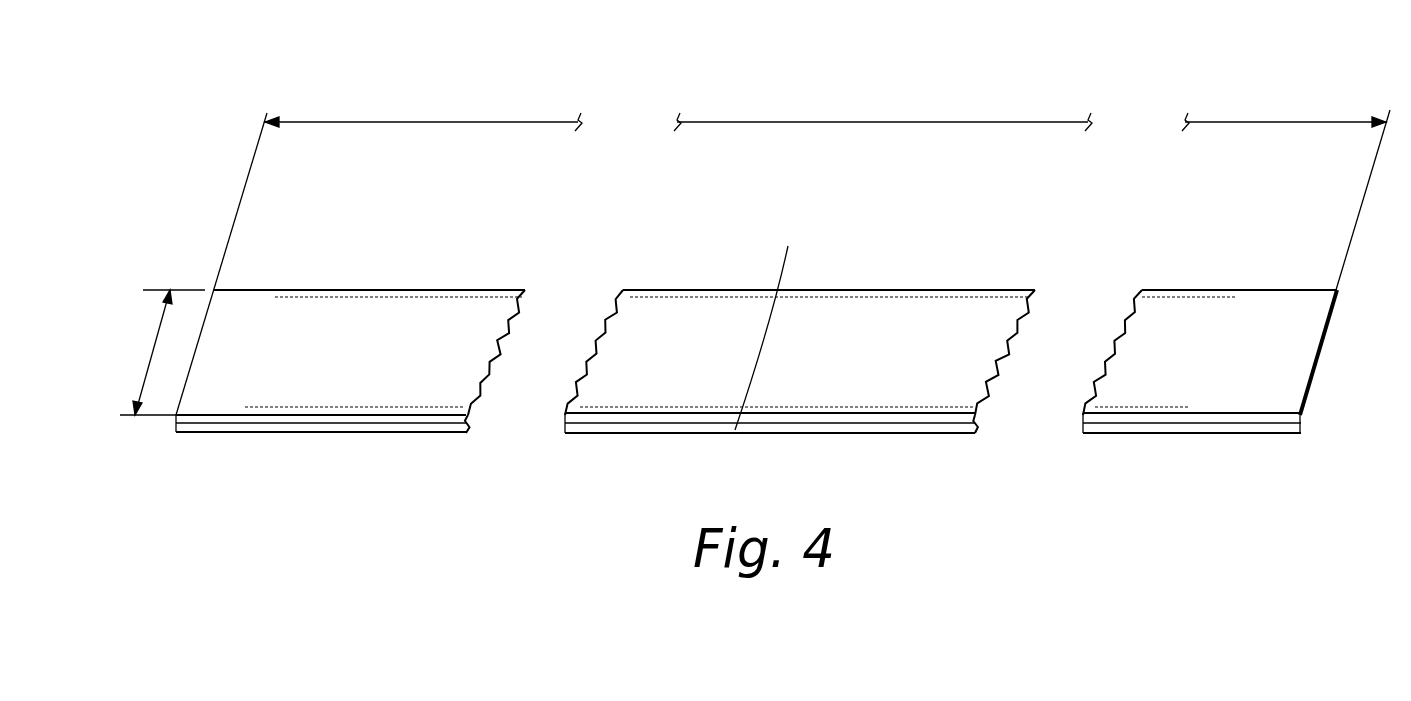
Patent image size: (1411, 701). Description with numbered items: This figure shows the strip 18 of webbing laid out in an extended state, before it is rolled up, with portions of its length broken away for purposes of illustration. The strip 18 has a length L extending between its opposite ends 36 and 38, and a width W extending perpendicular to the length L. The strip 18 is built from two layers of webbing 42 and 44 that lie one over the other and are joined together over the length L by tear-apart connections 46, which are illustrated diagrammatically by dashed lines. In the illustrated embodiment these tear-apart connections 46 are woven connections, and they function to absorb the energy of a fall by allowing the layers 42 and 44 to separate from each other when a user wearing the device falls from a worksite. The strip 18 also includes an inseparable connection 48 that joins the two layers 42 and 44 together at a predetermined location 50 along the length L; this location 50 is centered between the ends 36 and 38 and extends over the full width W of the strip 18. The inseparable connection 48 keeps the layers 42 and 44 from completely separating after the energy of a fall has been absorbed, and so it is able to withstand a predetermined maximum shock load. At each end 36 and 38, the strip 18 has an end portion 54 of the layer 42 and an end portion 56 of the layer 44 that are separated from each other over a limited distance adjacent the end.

The strip 18 is at (1068, 490).
The end 36 is at (1298, 345).
The end 38 is at (177, 415).
The layer of webbing 42 is at (655, 330).
The layer of webbing 44 is at (620, 433).
The tear-apart connections 46 is at (373, 403).
The inseparable connection 48 is at (752, 352).
The predetermined location 50 is at (788, 246).
The end portion 54 is at (238, 327).
The end portion 56 is at (222, 432).
The width W is at (155, 352).
The length L is at (885, 122).